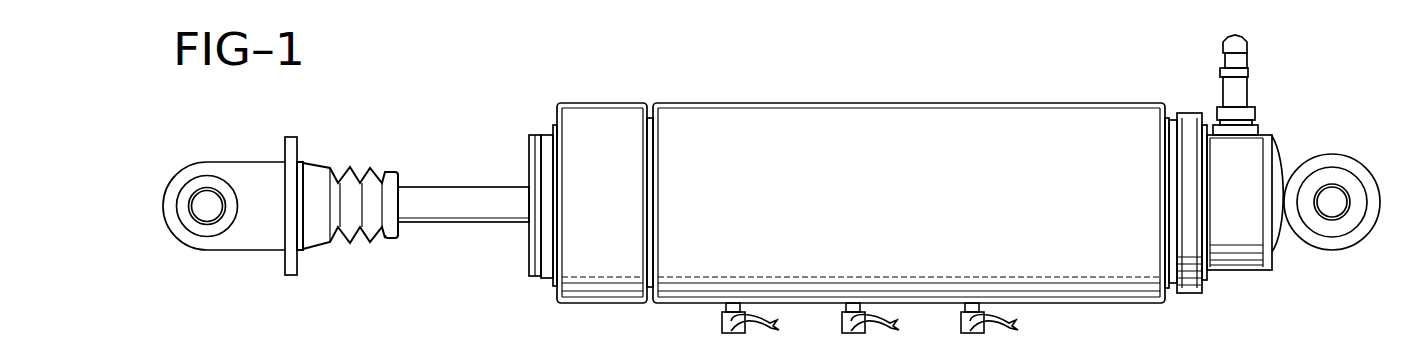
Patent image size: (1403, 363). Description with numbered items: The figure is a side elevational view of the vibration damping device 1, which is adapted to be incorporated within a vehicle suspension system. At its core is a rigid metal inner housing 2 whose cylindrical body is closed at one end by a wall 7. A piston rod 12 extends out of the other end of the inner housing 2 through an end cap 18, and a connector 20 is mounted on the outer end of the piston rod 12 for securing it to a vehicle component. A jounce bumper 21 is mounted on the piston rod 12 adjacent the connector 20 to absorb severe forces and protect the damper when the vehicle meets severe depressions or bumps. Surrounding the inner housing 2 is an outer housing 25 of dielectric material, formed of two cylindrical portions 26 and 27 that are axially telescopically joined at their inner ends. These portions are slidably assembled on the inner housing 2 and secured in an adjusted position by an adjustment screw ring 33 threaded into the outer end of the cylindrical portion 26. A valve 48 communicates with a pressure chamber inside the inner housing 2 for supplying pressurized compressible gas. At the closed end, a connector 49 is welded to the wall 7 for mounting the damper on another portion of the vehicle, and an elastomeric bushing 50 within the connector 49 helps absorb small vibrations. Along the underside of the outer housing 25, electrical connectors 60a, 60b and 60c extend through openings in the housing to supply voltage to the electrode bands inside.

The vibration damping device 1 is at (1024, 88).
The inner housing 2 is at (1260, 276).
The wall 7 is at (1282, 165).
The piston rod 12 is at (466, 196).
The end cap 18 is at (529, 257).
The connector 20 is at (253, 176).
The jounce bumper 21 is at (358, 170).
The outer housing 25 is at (948, 100).
The cylindrical portion 26 is at (786, 123).
The cylindrical portion 27 is at (608, 123).
The adjustment screw ring 33 is at (1190, 293).
The valve 48 is at (1223, 95).
The connector 49 is at (1333, 157).
The elastomeric bushing 50 is at (1336, 228).
The electrical connector 60a is at (733, 334).
The electrical connector 60b is at (853, 334).
The electrical connector 60c is at (972, 334).